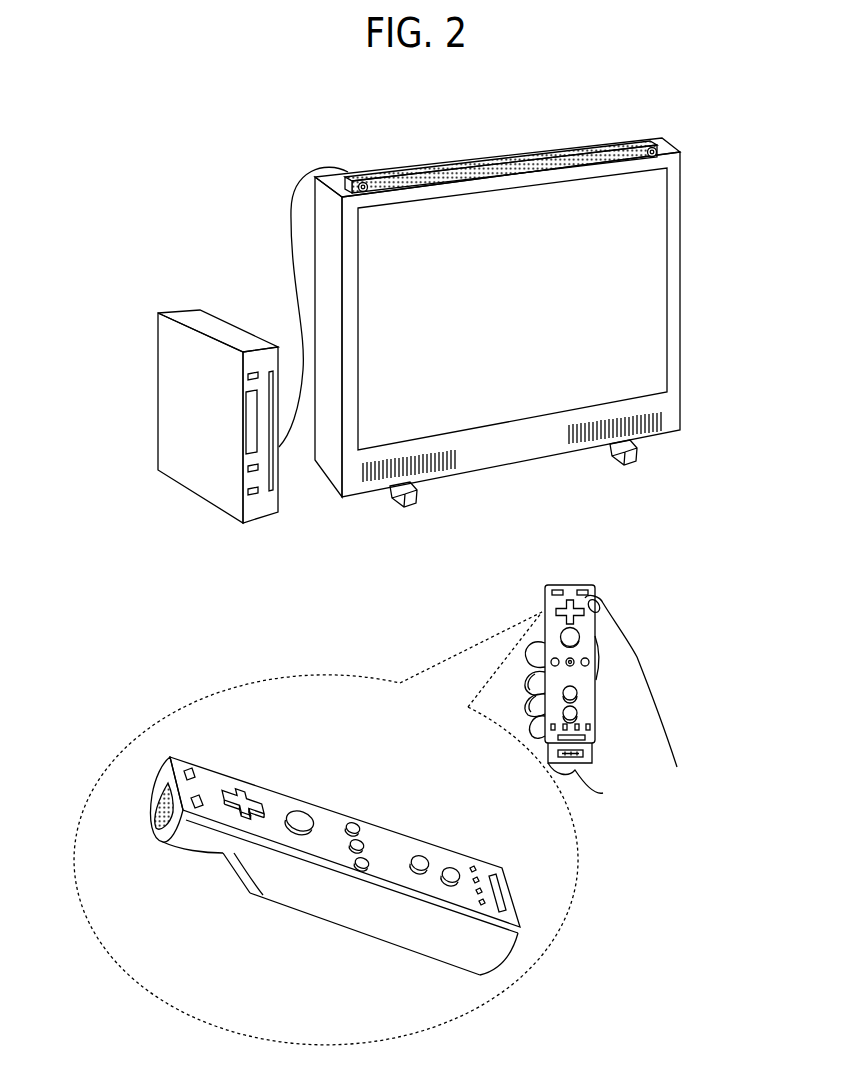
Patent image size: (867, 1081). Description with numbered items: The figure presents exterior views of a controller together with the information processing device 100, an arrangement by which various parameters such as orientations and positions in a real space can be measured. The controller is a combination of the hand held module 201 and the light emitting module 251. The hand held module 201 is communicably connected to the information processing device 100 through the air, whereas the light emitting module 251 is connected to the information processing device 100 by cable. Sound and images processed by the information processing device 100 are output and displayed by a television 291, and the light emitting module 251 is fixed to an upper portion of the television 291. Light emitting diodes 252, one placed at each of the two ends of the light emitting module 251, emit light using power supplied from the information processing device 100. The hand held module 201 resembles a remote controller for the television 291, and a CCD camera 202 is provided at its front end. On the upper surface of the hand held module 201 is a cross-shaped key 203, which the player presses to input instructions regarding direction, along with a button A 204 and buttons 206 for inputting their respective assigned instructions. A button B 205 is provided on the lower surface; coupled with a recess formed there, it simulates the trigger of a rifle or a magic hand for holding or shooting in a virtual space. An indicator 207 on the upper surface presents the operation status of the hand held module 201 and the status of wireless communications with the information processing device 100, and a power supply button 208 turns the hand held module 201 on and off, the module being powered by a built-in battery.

The information processing device 100 is at (213, 328).
The television 291 is at (674, 250).
The light emitting module 251 is at (477, 155).
The light emitting diodes 252 is at (364, 183).
The hand held module 201 is at (545, 592).
The CCD camera 202 is at (152, 803).
The cross-shaped key 203 is at (240, 788).
The button A 204 is at (299, 810).
The button B 205 is at (238, 874).
The buttons 206 is at (366, 858).
The indicator 207 is at (474, 896).
The power supply button 208 is at (195, 792).